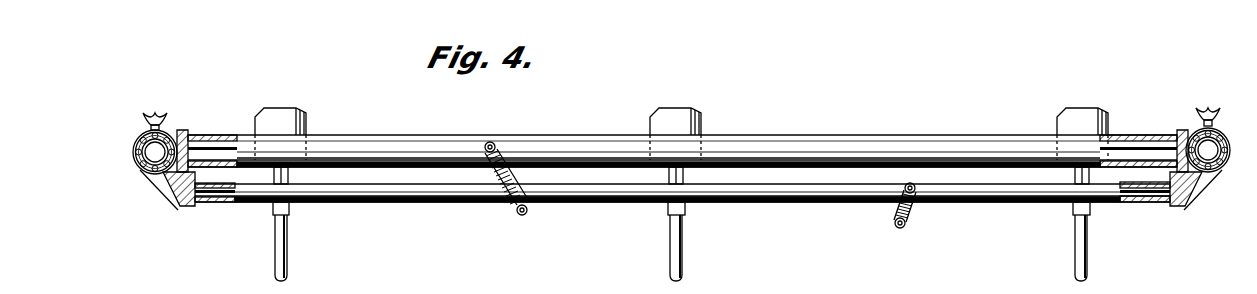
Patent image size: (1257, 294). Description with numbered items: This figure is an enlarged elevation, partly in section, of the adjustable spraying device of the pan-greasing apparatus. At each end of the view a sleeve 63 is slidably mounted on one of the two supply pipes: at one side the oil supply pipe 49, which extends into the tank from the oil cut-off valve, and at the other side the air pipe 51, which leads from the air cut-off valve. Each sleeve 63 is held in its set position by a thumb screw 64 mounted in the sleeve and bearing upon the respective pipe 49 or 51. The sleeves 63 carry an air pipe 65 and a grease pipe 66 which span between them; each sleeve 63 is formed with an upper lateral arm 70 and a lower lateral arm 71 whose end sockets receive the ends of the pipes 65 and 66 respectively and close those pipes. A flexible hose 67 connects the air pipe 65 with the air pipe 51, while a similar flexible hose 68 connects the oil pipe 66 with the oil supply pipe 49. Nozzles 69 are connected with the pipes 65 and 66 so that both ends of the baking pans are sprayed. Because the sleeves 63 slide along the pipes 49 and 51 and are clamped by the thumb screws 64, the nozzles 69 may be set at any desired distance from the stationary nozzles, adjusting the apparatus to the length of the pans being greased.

The pipe 49 is at (136, 140).
The pipe 51 is at (1212, 172).
The sleeve 63 is at (178, 135).
The thumb screw 64 is at (160, 112).
The air pipe 65 is at (553, 135).
The grease pipe 66 is at (580, 200).
The flexible hose 67 is at (515, 213).
The flexible hose 68 is at (912, 218).
The nozzle 69 is at (306, 122).
The upper lateral arm 70 is at (216, 135).
The lower lateral arm 71 is at (175, 210).